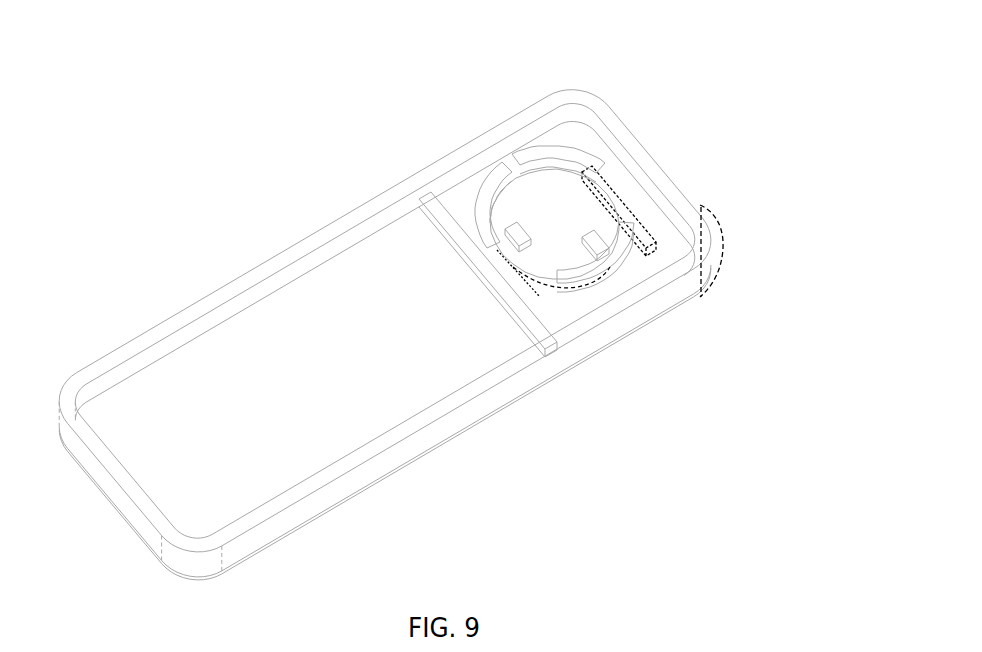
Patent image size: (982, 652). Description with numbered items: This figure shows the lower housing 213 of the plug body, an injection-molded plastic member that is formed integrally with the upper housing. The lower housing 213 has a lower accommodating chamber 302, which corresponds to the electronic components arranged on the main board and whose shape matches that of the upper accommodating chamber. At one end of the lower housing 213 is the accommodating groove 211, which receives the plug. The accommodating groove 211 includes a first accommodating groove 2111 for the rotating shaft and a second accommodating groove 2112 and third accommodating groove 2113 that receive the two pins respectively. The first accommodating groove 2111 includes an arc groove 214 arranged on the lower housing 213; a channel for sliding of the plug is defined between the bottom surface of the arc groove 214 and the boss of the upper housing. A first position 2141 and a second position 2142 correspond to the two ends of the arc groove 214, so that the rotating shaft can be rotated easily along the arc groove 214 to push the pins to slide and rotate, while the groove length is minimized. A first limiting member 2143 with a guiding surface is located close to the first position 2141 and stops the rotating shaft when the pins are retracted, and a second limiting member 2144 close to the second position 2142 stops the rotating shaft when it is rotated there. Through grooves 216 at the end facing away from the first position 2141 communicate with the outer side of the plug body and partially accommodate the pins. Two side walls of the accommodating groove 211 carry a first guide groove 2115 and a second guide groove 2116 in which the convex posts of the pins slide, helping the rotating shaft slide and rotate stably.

The accommodating groove 211 is at (608, 46).
The first accommodating groove 2111 is at (548, 227).
The second accommodating groove 2112 is at (506, 210).
The third accommodating groove 2113 is at (580, 274).
The first guide groove 2115 is at (483, 197).
The second guide groove 2116 is at (580, 304).
The lower housing 213 is at (437, 438).
The arc groove 214 is at (506, 252).
The first position 2141 is at (525, 270).
The second position 2142 is at (616, 216).
The first limiting member 2143 is at (516, 237).
The second limiting member 2144 is at (595, 250).
The through groove 216 is at (617, 130).
The lower accommodating chamber 302 is at (319, 430).